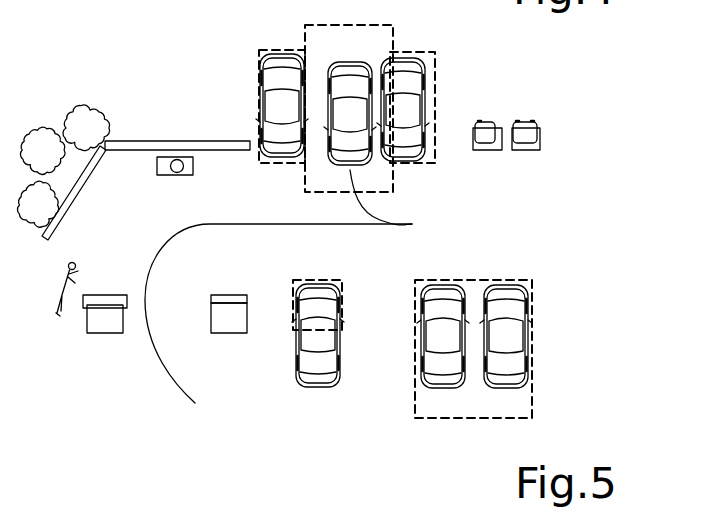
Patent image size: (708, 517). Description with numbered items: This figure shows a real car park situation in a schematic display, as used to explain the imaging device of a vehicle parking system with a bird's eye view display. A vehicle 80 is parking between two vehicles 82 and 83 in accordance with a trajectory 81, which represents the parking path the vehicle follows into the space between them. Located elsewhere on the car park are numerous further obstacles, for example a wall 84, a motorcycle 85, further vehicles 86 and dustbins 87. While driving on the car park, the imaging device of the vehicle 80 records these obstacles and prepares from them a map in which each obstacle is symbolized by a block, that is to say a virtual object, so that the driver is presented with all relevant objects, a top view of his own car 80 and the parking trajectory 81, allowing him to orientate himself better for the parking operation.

The vehicle 80 is at (347, 100).
The trajectory 81 is at (276, 225).
The vehicle 82 is at (403, 100).
The vehicle 83 is at (275, 97).
The wall 84 is at (133, 141).
The motorcycle 85 is at (80, 268).
The further vehicles 86 is at (442, 295).
The dustbins 87 is at (530, 133).